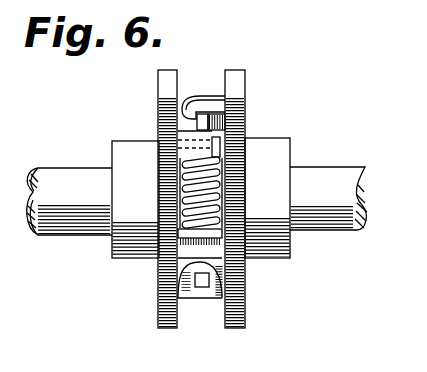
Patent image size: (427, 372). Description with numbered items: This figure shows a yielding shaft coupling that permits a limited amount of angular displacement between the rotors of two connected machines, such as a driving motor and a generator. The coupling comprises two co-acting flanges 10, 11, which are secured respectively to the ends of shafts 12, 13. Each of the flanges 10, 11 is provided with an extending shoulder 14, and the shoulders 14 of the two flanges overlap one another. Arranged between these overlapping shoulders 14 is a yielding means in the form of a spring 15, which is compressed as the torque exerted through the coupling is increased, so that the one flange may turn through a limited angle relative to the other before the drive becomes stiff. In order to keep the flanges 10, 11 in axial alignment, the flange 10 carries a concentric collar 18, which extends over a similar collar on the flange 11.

The flange 10 is at (163, 88).
The flange 11 is at (245, 93).
The shaft 12 is at (87, 167).
The shaft 13 is at (323, 168).
The extending shoulder 14 is at (195, 96).
The spring 15 is at (180, 213).
The concentric collar 18 is at (245, 130).